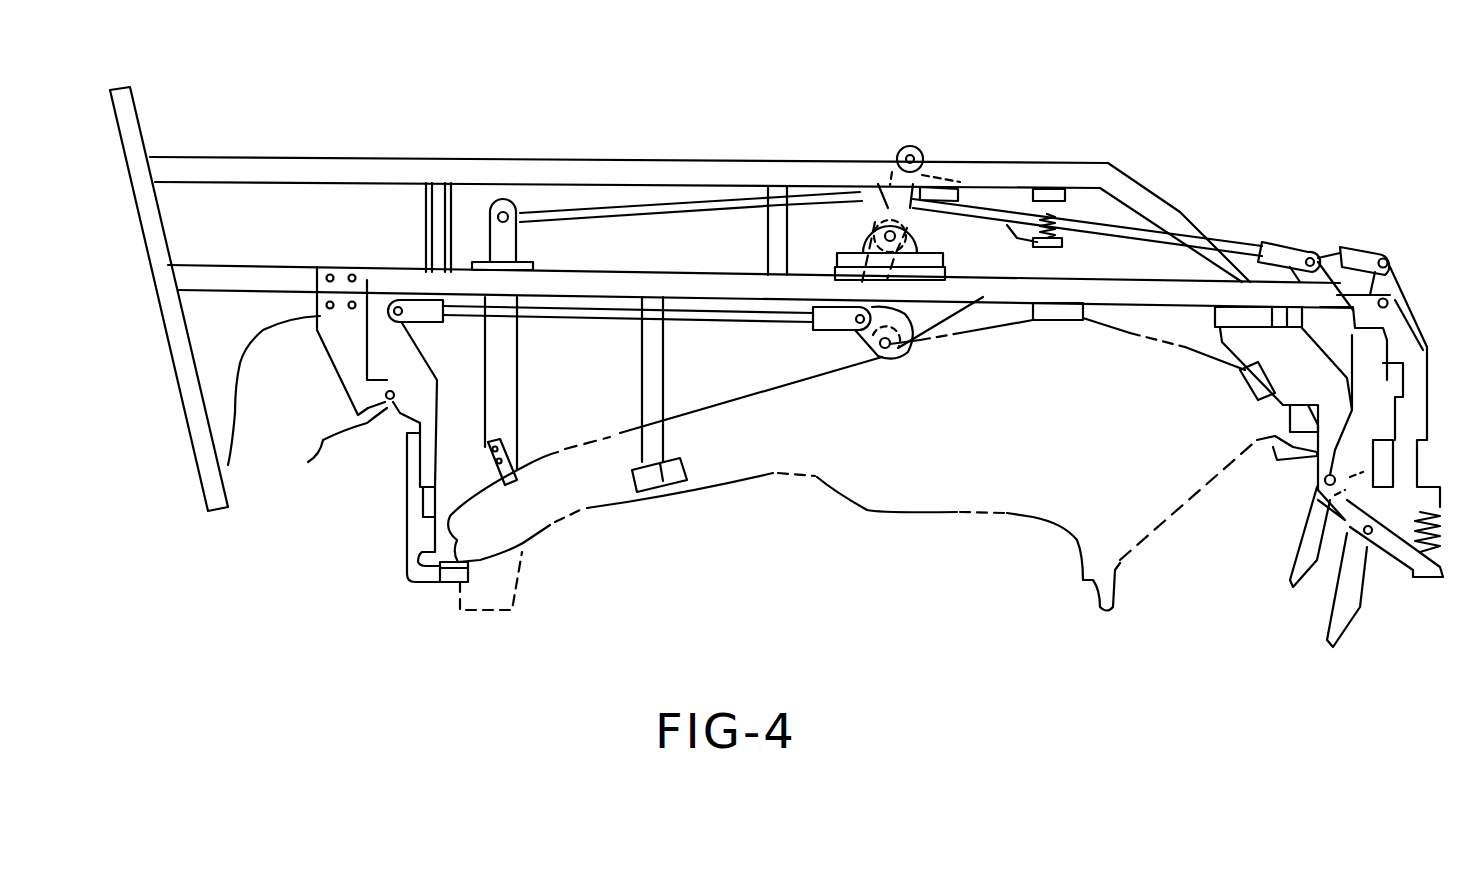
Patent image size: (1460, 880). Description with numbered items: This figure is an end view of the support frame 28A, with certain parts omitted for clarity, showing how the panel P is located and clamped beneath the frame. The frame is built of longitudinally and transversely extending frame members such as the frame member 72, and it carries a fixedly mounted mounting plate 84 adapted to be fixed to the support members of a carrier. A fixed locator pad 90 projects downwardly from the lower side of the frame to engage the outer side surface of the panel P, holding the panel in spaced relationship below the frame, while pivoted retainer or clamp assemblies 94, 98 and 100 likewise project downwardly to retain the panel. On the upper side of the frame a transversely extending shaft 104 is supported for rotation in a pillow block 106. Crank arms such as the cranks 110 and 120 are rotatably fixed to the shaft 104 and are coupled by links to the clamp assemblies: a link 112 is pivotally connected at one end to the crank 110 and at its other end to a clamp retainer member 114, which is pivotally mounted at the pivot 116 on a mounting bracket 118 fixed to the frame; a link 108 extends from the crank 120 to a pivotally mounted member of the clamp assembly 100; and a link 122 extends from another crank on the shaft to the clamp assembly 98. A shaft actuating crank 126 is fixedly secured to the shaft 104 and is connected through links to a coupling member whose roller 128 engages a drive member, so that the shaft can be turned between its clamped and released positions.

The mounting plate 84 is at (160, 232).
The support frame 28A is at (689, 160).
The frame member 72 is at (615, 268).
The pillow block 106 is at (857, 227).
The crank 120 is at (885, 195).
The shaft 104 is at (895, 235).
The link 122 is at (1060, 202).
The link 108 is at (1227, 230).
The clamp assembly 100 is at (1432, 333).
The mounting bracket 118 is at (340, 336).
The clamp retainer member 114 is at (423, 398).
The link 112 is at (548, 320).
The pivot 116 is at (308, 462).
The clamp assembly 94 is at (397, 545).
The roller 128 is at (882, 362).
The shaft actuating crank 126 is at (923, 322).
The crank 110 is at (910, 345).
The locator pad 90 is at (1060, 330).
The clamp assembly 98 is at (1313, 483).
The panel P is at (900, 498).